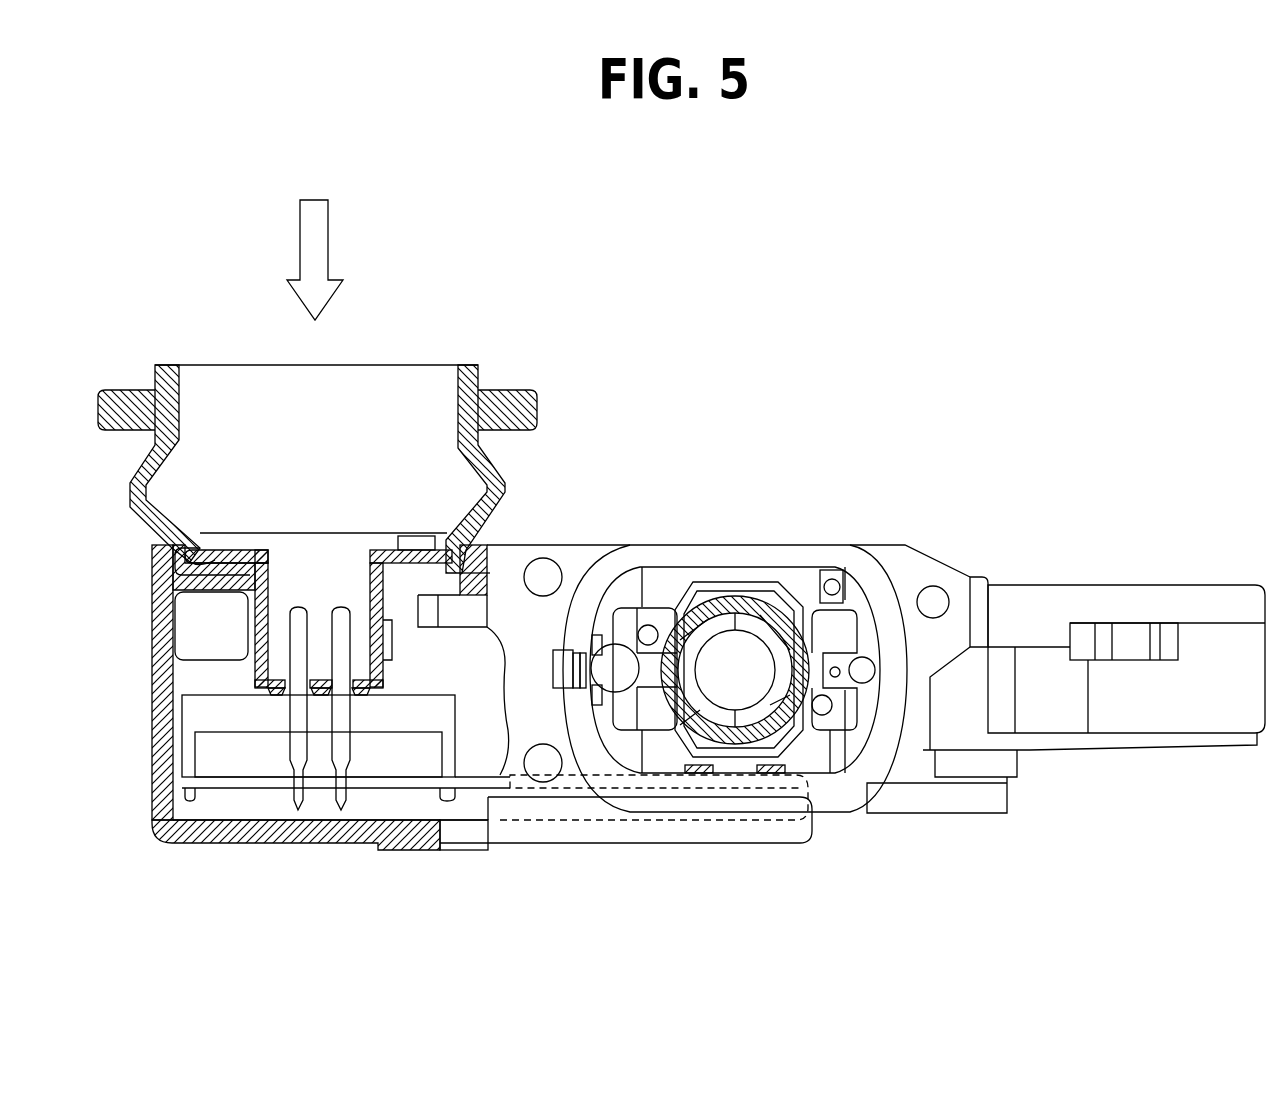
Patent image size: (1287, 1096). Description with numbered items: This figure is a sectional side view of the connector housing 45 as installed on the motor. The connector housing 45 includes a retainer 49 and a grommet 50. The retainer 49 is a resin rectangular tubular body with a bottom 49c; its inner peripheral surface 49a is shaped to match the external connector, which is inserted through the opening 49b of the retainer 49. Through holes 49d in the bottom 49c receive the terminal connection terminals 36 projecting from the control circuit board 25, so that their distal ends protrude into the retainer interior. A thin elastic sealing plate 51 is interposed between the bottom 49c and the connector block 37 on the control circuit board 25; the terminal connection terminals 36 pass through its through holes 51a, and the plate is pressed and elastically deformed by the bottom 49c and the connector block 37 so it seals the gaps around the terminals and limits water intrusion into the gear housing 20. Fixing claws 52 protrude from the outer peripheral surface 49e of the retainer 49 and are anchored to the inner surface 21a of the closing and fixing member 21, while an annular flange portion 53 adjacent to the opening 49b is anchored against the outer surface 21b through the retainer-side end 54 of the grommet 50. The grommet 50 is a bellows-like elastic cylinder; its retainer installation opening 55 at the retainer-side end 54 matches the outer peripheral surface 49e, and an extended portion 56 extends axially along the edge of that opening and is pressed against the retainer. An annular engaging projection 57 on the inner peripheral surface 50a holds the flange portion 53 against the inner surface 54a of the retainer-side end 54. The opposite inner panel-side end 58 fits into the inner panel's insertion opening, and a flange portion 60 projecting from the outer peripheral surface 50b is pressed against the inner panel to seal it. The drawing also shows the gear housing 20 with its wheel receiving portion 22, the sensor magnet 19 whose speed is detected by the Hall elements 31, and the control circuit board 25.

The connector housing 45 is at (75, 470).
The inner panel-side end 58 is at (468, 366).
The grommet 50 is at (506, 483).
The inner peripheral surface 50a is at (182, 410).
The outer peripheral surface 50b is at (480, 520).
The flange portion 60 is at (535, 408).
The engaging projection 57 is at (206, 539).
The flange portion 53 is at (248, 548).
The inner surface 54a is at (403, 548).
The retainer installation opening 55 is at (370, 558).
The retainer-side end 54 is at (172, 576).
The fixing claws 52 is at (158, 672).
The closing and fixing member 21 is at (200, 832).
The inner surface 21a is at (209, 598).
The outer surface 21b is at (469, 594).
The retainer 49 is at (391, 656).
The inner peripheral surface 49a is at (297, 590).
The opening 49b is at (282, 546).
The extended portion 56 is at (374, 652).
The through holes 49d is at (268, 686).
The outer peripheral surface 49e is at (386, 684).
The bottom 49c is at (373, 692).
The sealing plate 51 is at (264, 692).
The connector block 37 is at (186, 750).
The through holes 51a is at (292, 692).
The terminal connection terminals 36 is at (333, 812).
The control circuit board 25 is at (470, 852).
The Hall elements 31 is at (808, 804).
The gear housing 20 is at (1010, 586).
The wheel receiving portion 22 is at (1193, 733).
The sensor magnet 19 is at (736, 597).